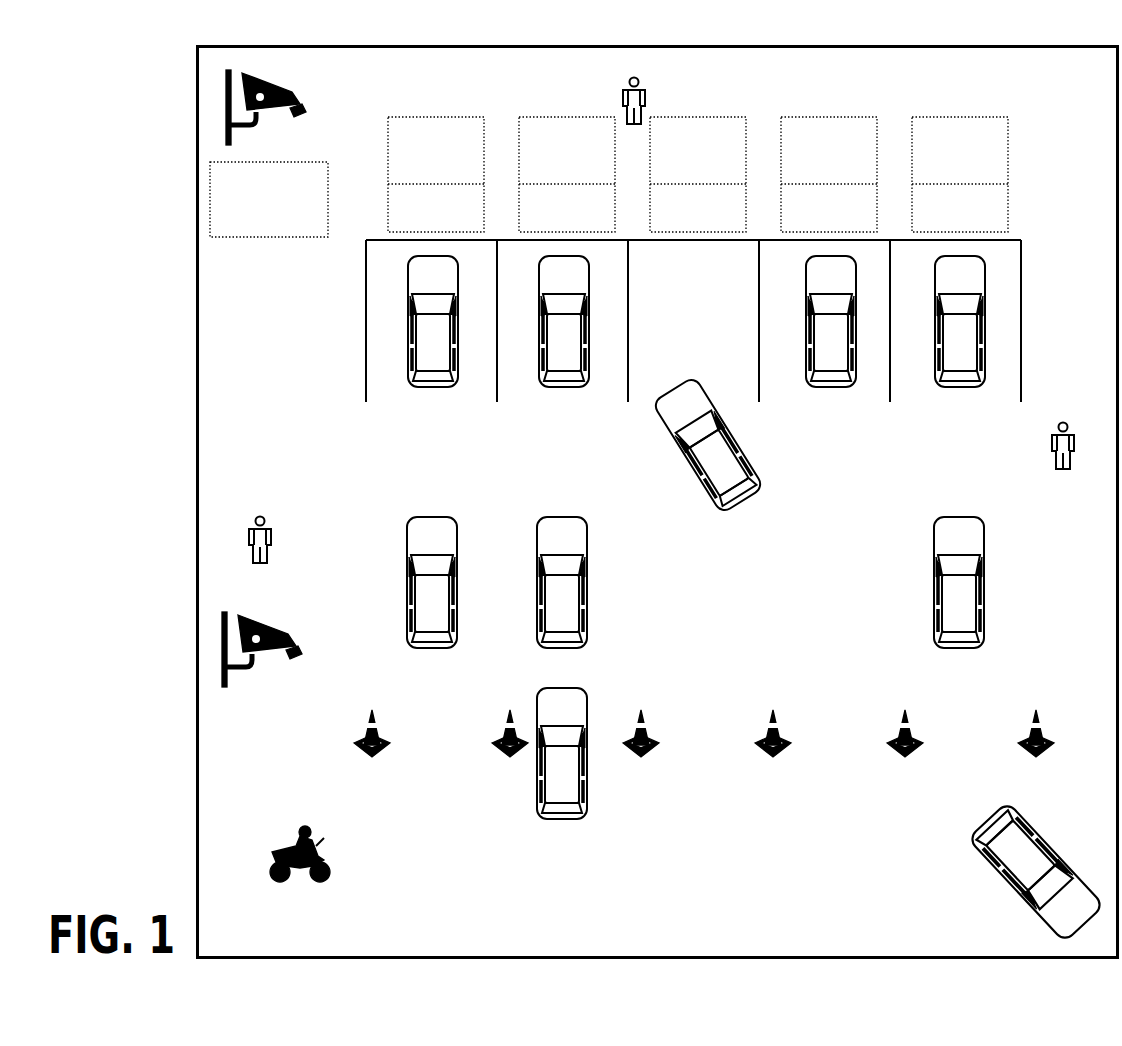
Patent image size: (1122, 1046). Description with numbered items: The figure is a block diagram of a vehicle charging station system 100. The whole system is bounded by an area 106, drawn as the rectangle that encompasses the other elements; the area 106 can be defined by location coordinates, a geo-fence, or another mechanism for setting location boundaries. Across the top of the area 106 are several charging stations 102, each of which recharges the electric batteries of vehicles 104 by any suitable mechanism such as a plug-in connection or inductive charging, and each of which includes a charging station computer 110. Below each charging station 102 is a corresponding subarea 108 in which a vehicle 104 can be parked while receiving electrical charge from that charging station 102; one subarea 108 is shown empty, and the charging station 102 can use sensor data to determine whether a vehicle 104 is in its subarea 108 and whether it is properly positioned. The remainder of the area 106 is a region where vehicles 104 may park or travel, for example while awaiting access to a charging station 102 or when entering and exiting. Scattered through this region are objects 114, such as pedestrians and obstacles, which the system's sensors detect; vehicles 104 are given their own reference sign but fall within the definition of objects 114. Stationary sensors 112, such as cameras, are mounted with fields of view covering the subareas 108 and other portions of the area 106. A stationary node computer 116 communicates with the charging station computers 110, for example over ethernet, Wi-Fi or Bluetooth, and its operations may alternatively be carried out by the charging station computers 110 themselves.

The vehicle charging station system 100 is at (134, 80).
The charging station 102 is at (441, 113).
The vehicle 104 is at (458, 320).
The area 106 is at (689, 933).
The subarea 108 is at (400, 271).
The charging station computer 110 is at (424, 225).
The stationary sensor 112 is at (295, 93).
The object 114 is at (642, 92).
The stationary node computer 116 is at (257, 227).